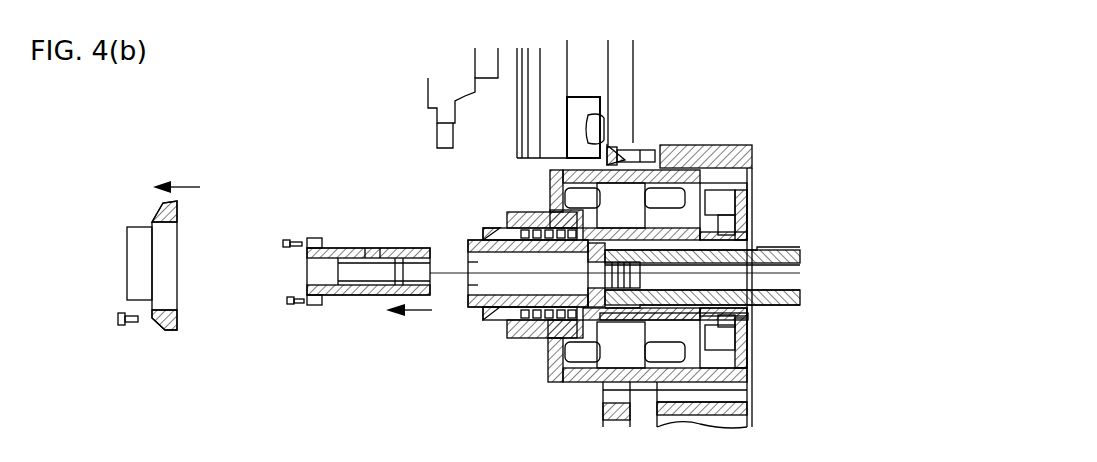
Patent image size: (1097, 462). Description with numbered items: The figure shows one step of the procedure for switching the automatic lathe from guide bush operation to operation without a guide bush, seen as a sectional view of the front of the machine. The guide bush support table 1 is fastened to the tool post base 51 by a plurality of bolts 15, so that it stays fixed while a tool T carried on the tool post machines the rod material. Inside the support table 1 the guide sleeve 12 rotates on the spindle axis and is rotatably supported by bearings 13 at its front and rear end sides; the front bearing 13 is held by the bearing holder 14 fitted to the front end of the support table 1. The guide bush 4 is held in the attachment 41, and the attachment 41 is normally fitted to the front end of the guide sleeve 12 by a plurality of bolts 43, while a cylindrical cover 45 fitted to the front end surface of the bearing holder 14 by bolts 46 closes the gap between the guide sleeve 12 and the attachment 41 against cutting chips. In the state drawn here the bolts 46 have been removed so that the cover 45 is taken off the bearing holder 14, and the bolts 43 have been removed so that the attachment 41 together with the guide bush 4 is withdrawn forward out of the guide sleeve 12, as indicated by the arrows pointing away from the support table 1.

The guide bush support table 1 is at (741, 132).
The guide bush 4 is at (330, 311).
The guide sleeve 12 is at (500, 218).
The bearing 13 is at (540, 213).
The bearing holder 14 is at (527, 338).
The bolt 15 is at (638, 148).
The attachment 41 is at (332, 312).
The bolt 43 is at (297, 236).
The cover 45 is at (172, 331).
The bolt 46 is at (145, 323).
The tool post base 51 is at (622, 92).
The tool T is at (410, 70).